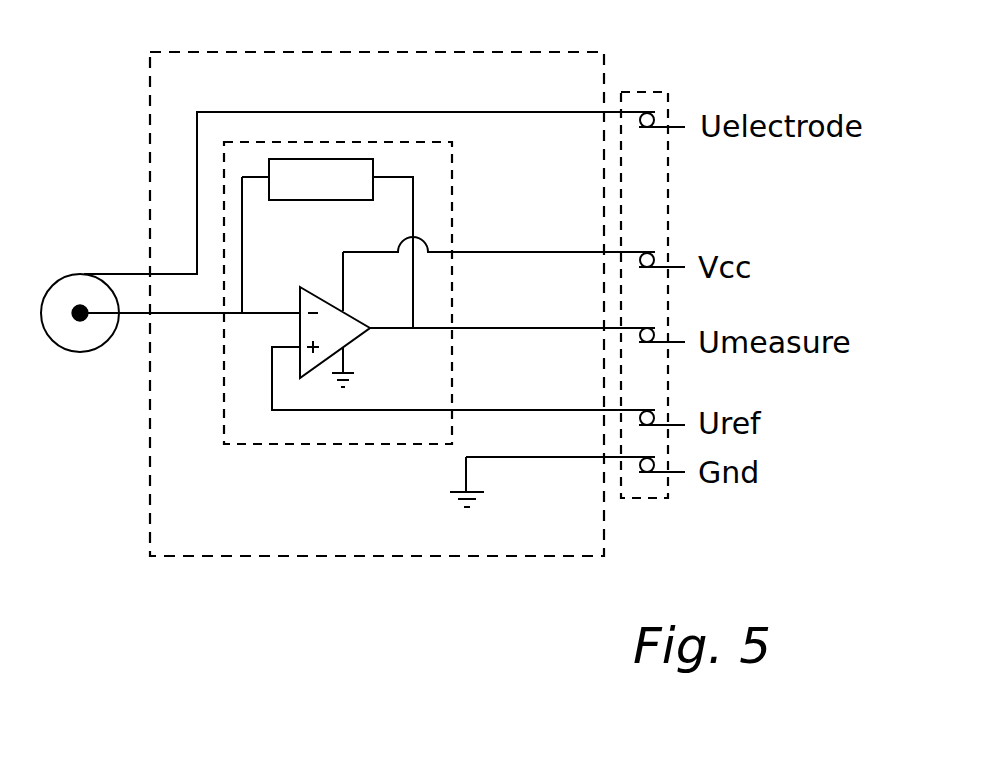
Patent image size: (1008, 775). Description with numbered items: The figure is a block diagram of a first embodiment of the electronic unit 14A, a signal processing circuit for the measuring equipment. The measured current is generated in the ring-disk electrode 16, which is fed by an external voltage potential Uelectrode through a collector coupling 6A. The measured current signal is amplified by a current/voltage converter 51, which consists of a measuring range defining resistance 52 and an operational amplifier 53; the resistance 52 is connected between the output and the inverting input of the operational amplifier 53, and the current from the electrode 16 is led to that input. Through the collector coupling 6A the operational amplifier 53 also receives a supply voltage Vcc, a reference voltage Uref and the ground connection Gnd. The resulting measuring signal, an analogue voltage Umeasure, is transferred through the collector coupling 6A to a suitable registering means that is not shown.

The electronic unit 14A is at (499, 52).
The collector coupling 6A is at (624, 92).
The ring-disk electrode 16 is at (63, 332).
The current/voltage converter 51 is at (252, 444).
The measuring range defining resistance 52 is at (352, 160).
The operational amplifier 53 is at (318, 299).